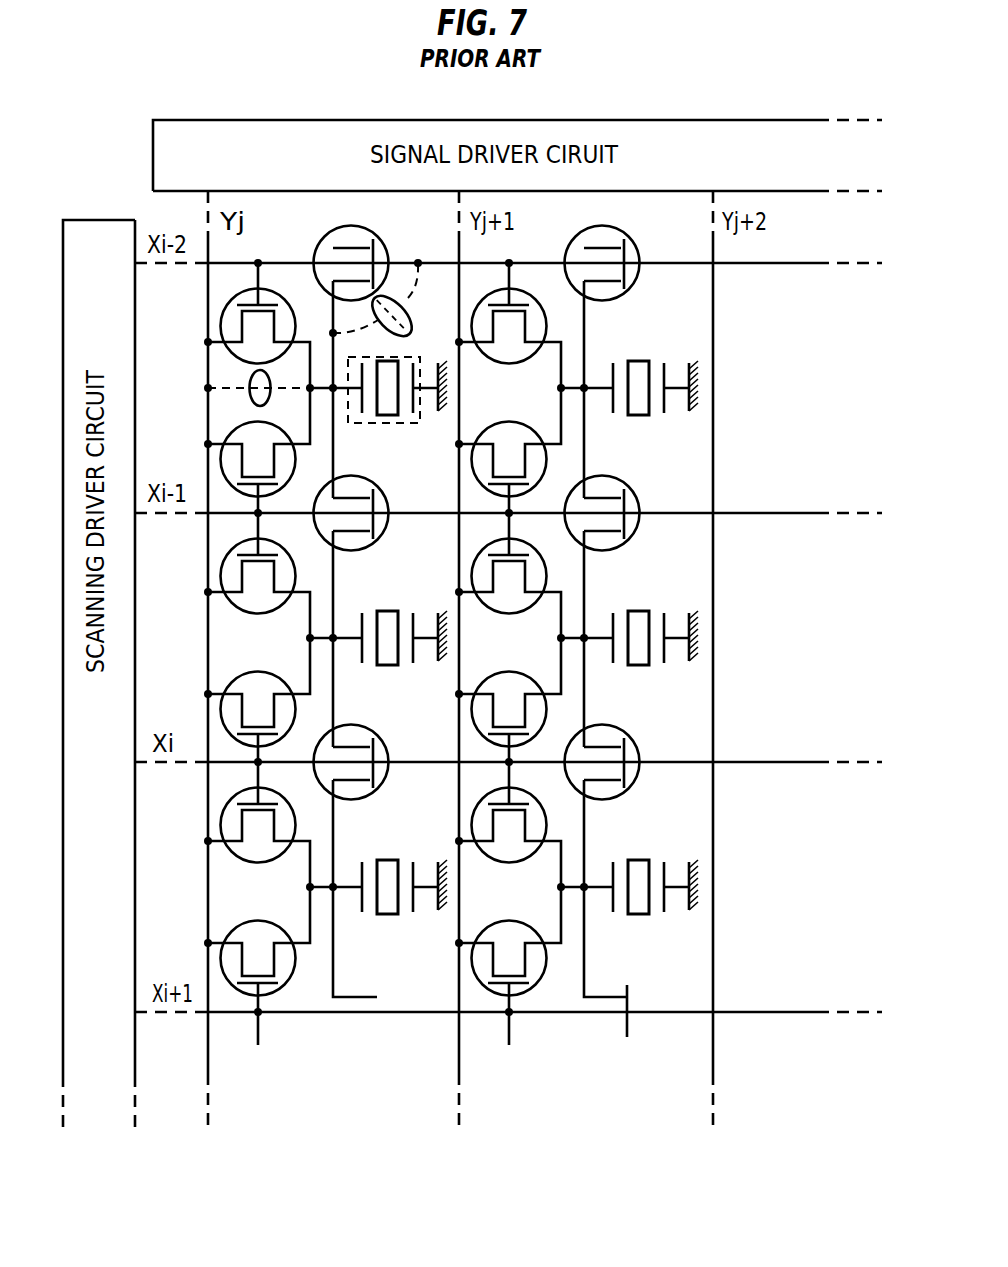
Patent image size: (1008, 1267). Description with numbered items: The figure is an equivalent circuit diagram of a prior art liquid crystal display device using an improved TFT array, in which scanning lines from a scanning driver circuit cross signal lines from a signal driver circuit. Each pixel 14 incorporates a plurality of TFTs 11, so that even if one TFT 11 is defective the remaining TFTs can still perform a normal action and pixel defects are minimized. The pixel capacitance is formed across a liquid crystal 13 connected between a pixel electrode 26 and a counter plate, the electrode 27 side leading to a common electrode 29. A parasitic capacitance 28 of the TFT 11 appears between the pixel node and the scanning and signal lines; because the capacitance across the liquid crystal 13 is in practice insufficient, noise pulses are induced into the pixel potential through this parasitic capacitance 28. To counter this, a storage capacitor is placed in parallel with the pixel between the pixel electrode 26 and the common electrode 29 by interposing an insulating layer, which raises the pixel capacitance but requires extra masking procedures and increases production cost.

The TFT 11 is at (220, 309).
The liquid crystal 13 is at (385, 395).
The pixel 14 is at (392, 429).
The pixel electrode 26 is at (355, 400).
The counter electrode 27 is at (415, 370).
The parasitic capacitance 28 is at (246, 378).
The common electrode 29 is at (446, 393).